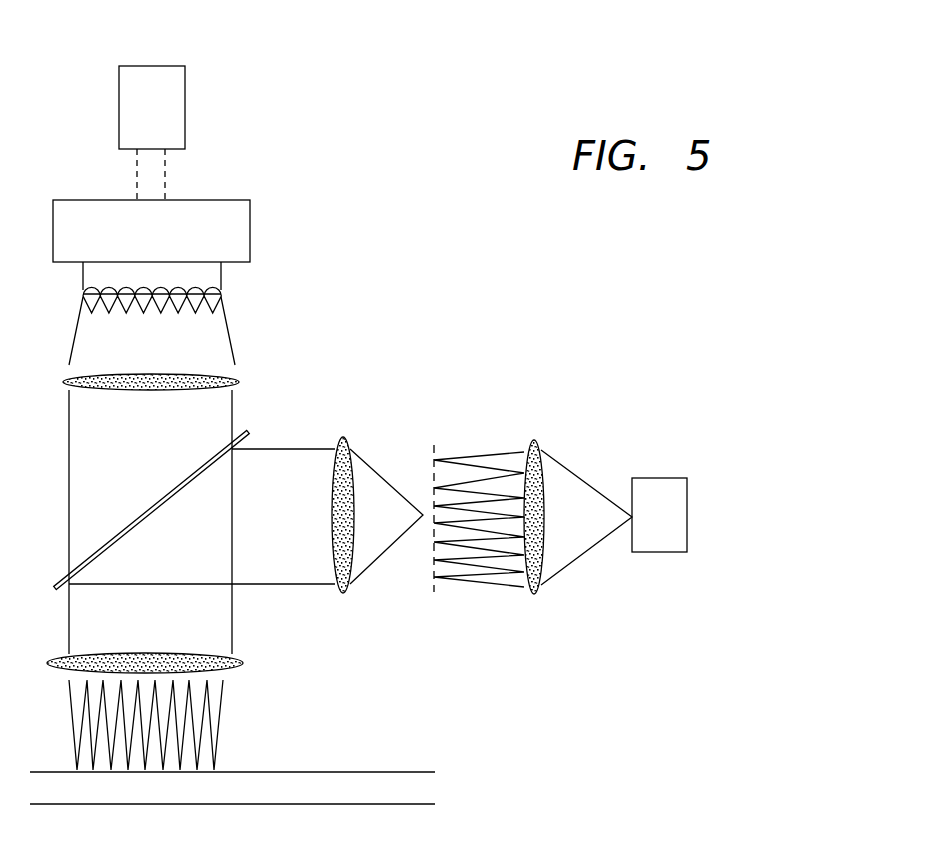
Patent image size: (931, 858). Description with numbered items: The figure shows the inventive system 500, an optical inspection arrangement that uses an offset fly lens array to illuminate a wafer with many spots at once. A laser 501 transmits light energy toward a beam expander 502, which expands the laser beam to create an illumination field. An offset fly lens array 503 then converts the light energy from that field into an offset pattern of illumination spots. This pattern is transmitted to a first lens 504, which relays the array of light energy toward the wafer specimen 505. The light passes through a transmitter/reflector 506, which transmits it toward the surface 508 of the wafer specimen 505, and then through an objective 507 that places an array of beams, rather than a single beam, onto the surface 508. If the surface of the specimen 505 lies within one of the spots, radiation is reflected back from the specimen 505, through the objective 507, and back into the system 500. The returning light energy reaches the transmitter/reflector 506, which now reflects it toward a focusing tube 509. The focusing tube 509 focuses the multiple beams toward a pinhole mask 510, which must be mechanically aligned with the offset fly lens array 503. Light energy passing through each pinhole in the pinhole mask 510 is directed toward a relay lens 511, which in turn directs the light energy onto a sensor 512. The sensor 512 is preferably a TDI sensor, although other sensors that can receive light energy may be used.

The inventive system 500 is at (514, 319).
The laser 501 is at (185, 114).
The beam expander 502 is at (250, 237).
The offset fly lens array 503 is at (221, 294).
The first lens 504 is at (239, 382).
The wafer specimen 505 is at (423, 789).
The transmitter/reflector 506 is at (184, 471).
The objective 507 is at (243, 663).
The surface 508 is at (330, 762).
The focusing tube 509 is at (341, 593).
The pinhole mask 510 is at (434, 597).
The relay lens 511 is at (534, 440).
The sensor 512 is at (687, 522).